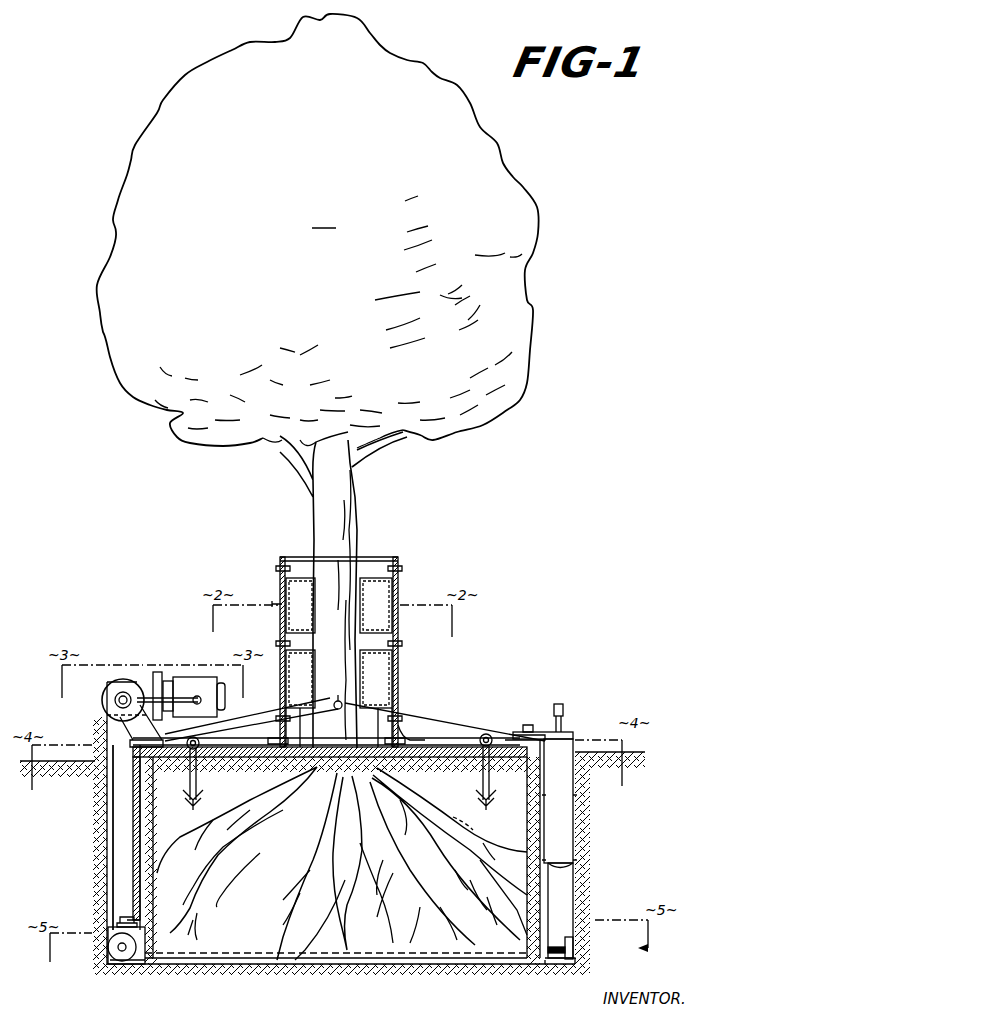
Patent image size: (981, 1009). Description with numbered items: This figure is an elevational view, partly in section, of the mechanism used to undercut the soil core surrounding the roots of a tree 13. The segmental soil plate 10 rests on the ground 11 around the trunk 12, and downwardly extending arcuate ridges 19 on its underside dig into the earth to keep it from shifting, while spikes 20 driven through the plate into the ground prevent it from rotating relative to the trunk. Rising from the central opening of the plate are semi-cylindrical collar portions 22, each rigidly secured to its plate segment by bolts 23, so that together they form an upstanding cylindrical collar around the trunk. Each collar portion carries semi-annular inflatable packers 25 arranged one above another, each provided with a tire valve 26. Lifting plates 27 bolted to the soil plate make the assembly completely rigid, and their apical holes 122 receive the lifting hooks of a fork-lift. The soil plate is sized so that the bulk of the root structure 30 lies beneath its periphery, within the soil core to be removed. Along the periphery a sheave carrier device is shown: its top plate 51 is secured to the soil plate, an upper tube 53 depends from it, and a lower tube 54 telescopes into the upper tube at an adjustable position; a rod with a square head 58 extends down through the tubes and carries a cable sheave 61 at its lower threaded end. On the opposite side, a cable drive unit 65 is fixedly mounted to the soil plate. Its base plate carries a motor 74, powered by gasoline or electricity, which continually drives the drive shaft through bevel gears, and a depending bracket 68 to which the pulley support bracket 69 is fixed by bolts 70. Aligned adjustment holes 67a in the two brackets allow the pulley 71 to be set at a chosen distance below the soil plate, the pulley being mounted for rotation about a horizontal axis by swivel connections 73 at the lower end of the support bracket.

The segmental soil plate 10 is at (420, 744).
The ground 11 is at (498, 745).
The trunk 12 is at (355, 546).
The tree 13 is at (487, 420).
The arcuate ridges 19 is at (218, 755).
The spikes 20 is at (490, 770).
The semi-cylindrical collar portion 22 is at (398, 600).
The bolts 23 is at (404, 728).
The semi-annular inflatable packers 25 is at (300, 594).
The tire valves 26 is at (283, 683).
The lifting plates 27 is at (458, 737).
The root structure 30 is at (335, 822).
The top plate 51 is at (566, 735).
The upper tube 53 is at (570, 828).
The lower tube 54 is at (570, 888).
The square head 58 is at (564, 705).
The cable sheave 61 is at (548, 968).
The cable drive unit 65 is at (128, 684).
The aligned adjustment holes 67a is at (140, 835).
The depending bracket 68 is at (107, 808).
The pulley support bracket 69 is at (140, 895).
The bolts 70 is at (122, 866).
The pulley 71 is at (125, 964).
The swivel connections 73 is at (120, 925).
The motor 74 is at (206, 680).
The apical holes 122 is at (345, 702).